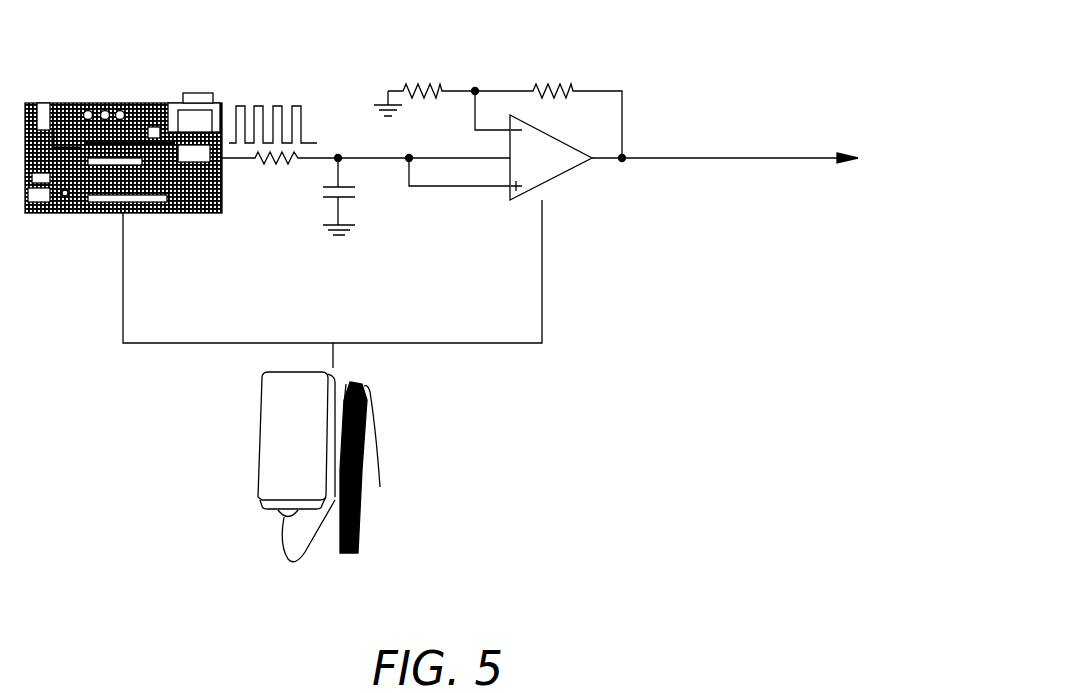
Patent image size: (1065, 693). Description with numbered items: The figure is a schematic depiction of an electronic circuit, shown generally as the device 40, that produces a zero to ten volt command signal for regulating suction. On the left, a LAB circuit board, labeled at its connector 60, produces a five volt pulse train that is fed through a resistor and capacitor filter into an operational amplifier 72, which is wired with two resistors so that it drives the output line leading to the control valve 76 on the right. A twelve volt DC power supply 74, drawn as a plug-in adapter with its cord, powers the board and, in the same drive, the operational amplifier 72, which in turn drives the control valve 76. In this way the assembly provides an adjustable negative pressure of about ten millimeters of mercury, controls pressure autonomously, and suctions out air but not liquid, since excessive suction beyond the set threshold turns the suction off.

The control circuit 40 is at (670, 66).
The circuit board connector 60 is at (205, 93).
The operational amplifier 72 is at (550, 131).
The power supply 74 is at (378, 405).
The control valve 76 is at (796, 88).